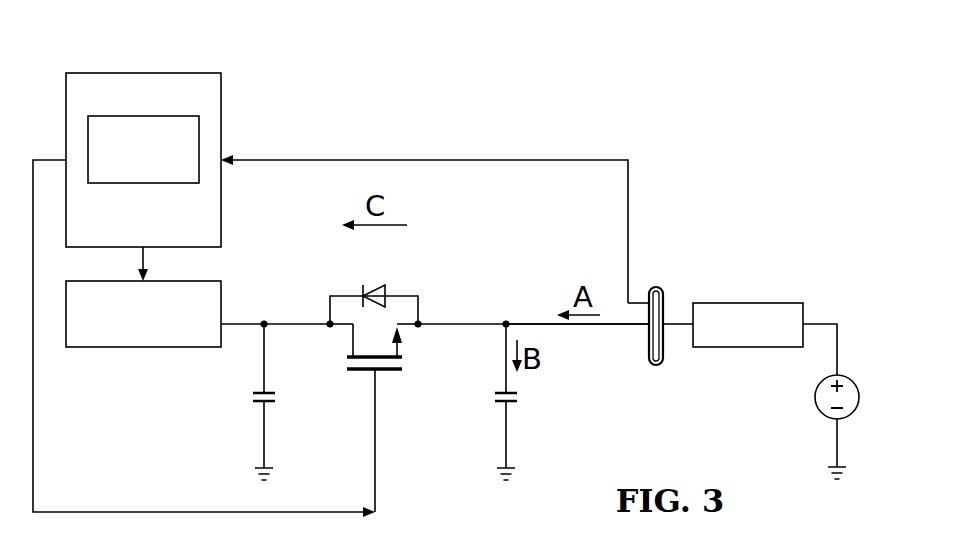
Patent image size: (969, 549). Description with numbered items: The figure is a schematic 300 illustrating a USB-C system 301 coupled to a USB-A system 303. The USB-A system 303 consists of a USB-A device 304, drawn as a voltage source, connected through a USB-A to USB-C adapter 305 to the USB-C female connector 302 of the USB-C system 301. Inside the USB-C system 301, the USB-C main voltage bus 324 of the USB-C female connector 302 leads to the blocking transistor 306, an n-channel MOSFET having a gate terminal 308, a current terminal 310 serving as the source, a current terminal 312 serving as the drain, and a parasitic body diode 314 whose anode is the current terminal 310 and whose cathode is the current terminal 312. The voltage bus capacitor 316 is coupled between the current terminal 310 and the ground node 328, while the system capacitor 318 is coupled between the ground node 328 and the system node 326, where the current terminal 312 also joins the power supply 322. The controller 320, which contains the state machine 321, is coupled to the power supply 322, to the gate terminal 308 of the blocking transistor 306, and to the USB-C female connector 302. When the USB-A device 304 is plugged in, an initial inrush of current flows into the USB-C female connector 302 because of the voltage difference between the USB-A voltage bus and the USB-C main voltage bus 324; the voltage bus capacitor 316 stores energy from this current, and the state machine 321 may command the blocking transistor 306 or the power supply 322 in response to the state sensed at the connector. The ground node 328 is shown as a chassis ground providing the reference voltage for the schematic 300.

The schematic 300 is at (686, 96).
The USB-C system 301 is at (654, 392).
The USB-C female connector 302 is at (648, 338).
The USB-A system 303 is at (681, 270).
The USB-A device 304 is at (860, 397).
The USB-A to USB-C adapter 305 is at (750, 302).
The blocking transistor 306 is at (374, 418).
The gate terminal 308 is at (391, 373).
The current terminal 310 is at (398, 348).
The current terminal 312 is at (351, 342).
The parasitic body diode 314 is at (370, 287).
The voltage bus capacitor 316 is at (519, 397).
The system capacitor 318 is at (252, 398).
The controller 320 is at (132, 72).
The state machine 321 is at (143, 184).
The power supply 322 is at (132, 348).
The USB-C main voltage bus 324 is at (442, 323).
The system node 326 is at (310, 323).
The ground node 328 is at (252, 470).